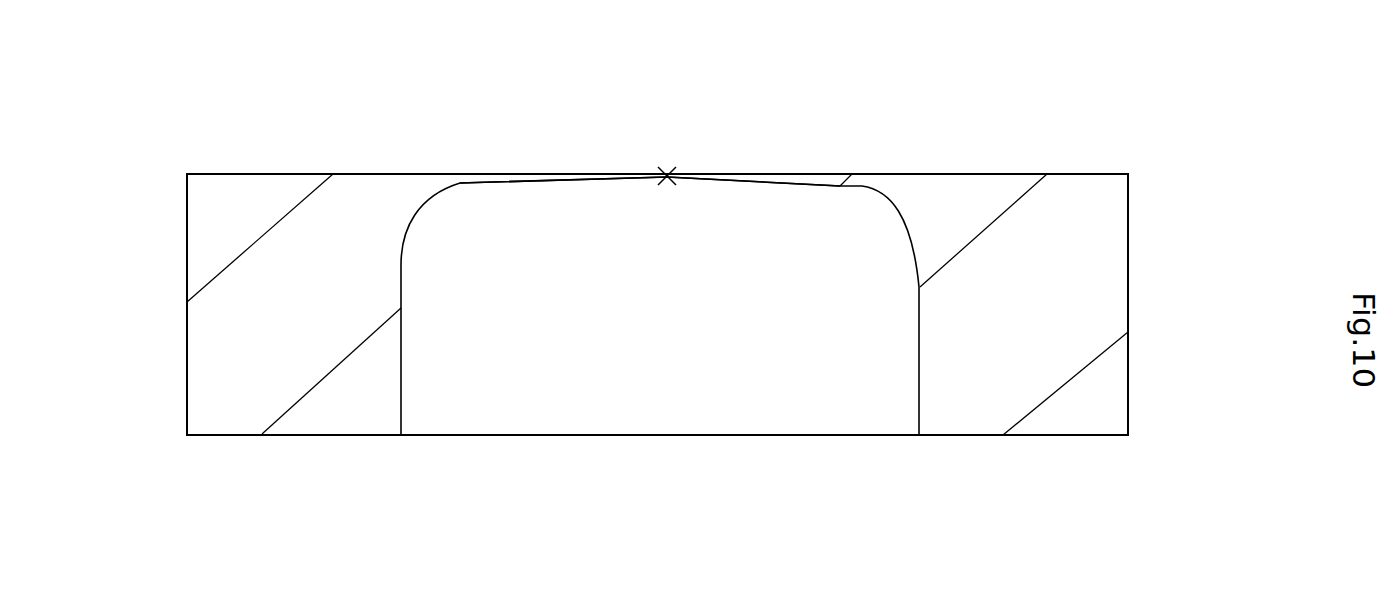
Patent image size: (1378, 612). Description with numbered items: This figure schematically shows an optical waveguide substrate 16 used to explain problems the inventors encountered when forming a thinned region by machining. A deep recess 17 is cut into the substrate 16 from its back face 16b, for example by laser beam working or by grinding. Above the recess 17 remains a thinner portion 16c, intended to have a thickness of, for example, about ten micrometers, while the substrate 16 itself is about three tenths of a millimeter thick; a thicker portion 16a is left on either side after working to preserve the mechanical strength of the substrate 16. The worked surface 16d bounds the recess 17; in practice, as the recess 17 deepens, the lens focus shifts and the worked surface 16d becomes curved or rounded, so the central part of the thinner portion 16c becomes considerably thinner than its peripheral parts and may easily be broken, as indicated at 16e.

The substrate 16 is at (1087, 160).
The thicker portion 16a is at (232, 356).
The back face 16b is at (318, 435).
The thinner portion 16c is at (520, 173).
The worked surface 16d is at (550, 174).
The broken part 16e is at (655, 160).
The recess 17 is at (652, 369).